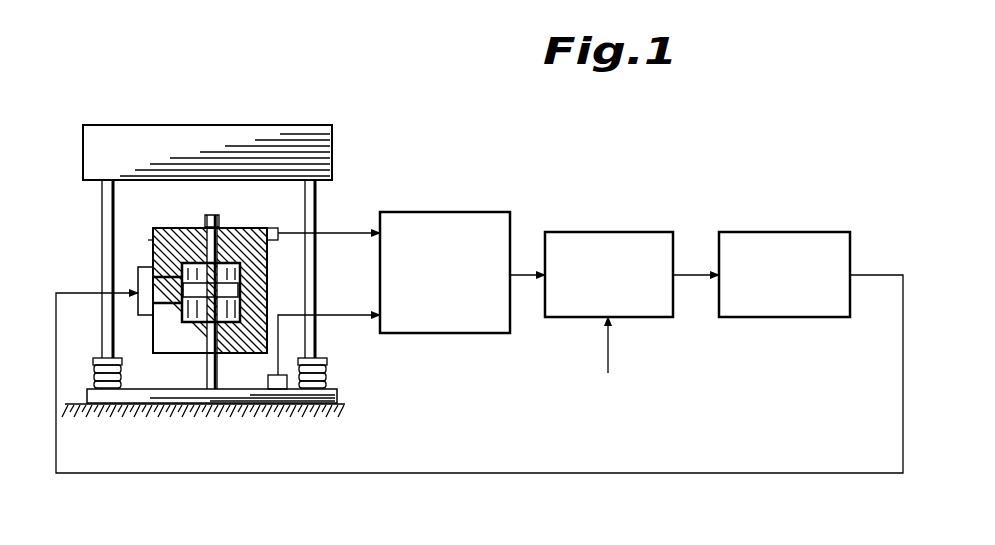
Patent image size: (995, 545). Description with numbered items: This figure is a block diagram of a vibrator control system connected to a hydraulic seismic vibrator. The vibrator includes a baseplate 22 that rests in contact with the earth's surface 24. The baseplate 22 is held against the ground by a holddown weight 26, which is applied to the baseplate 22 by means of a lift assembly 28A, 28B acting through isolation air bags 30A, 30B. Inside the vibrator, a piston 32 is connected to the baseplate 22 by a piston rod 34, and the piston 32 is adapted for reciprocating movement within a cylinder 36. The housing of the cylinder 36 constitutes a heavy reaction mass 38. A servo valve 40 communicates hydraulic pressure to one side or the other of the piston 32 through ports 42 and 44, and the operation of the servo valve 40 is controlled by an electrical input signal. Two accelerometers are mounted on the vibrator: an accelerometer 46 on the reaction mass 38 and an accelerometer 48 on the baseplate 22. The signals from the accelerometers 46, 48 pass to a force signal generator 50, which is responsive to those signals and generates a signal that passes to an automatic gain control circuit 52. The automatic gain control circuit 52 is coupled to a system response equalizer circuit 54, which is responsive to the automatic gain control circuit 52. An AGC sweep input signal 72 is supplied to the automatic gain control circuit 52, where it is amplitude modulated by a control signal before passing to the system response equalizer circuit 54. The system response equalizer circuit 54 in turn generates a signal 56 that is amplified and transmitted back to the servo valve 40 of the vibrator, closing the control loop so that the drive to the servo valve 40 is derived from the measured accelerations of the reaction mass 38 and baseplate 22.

The baseplate 22 is at (337, 396).
The earth's surface 24 is at (340, 414).
The holddown weight 26 is at (325, 130).
The lift assembly 28A is at (113, 198).
The lift assembly 28B is at (316, 196).
The isolation air bag 30A is at (93, 375).
The isolation air bag 30B is at (327, 362).
The piston 32 is at (232, 283).
The piston rod 34 is at (213, 215).
The cylinder 36 is at (188, 228).
The reaction mass 38 is at (153, 240).
The servo valve 40 is at (140, 316).
The port 42 is at (168, 240).
The port 44 is at (157, 353).
The accelerometer 46 is at (278, 233).
The accelerometer 48 is at (273, 389).
The force signal generator 50 is at (462, 333).
The automatic gain control circuit 52 is at (663, 317).
The system response equalizer circuit 54 is at (795, 317).
The signal 56 is at (415, 473).
The AGC sweep input signal 72 is at (610, 368).